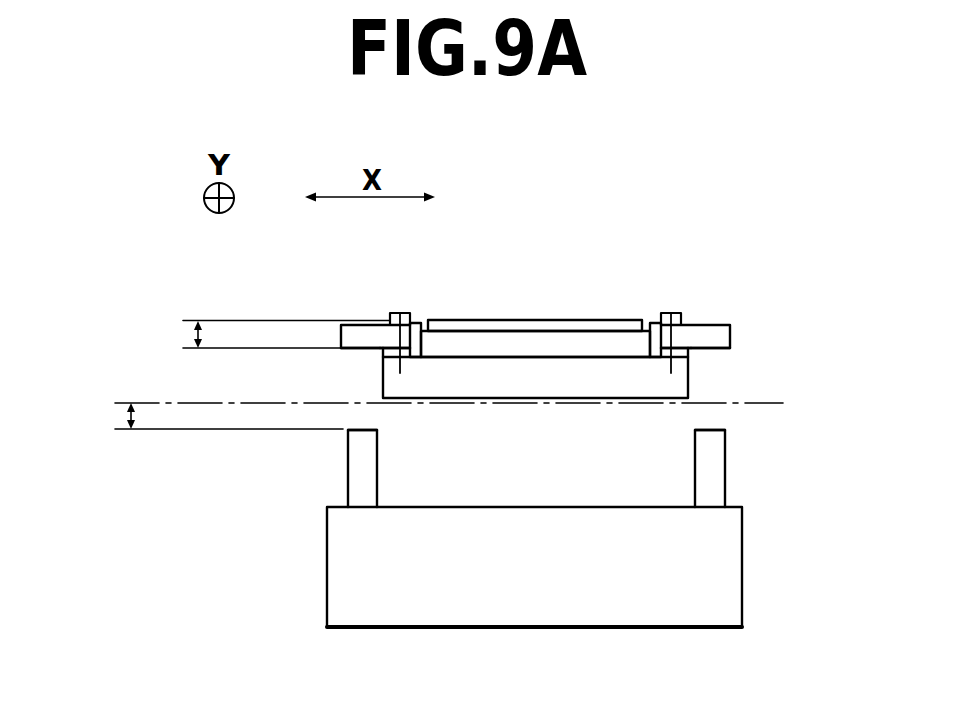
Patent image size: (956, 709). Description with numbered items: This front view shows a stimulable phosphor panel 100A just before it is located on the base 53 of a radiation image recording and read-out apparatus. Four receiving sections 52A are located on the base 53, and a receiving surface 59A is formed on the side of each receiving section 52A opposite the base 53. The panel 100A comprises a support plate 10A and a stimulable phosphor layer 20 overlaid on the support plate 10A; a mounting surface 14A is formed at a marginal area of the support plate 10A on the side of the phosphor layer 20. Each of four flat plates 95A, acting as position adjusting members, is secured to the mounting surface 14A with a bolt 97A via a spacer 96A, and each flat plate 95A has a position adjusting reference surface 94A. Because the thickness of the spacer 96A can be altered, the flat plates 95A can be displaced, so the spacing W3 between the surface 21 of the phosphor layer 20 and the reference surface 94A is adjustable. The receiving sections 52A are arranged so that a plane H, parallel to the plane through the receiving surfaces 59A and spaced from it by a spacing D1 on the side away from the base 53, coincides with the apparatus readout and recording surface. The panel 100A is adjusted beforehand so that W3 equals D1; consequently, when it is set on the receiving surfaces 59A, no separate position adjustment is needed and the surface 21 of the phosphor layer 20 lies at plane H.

The stimulable phosphor panel 100A is at (493, 218).
The support plate 10A is at (683, 377).
The stimulable phosphor layer 20 is at (537, 330).
The surface of the stimulable phosphor layer 21 is at (487, 320).
The mounting surface 14A is at (415, 325).
The flat plate 95A is at (340, 337).
The spacer 96A is at (383, 352).
The position adjusting reference surface 94A is at (340, 350).
The bolt 97A is at (392, 312).
The base 53 is at (730, 591).
The receiving section 52A is at (360, 480).
The receiving surface 59A is at (371, 431).
The spacing W3 is at (190, 335).
The plane H is at (153, 402).
The spacing D1 is at (128, 418).